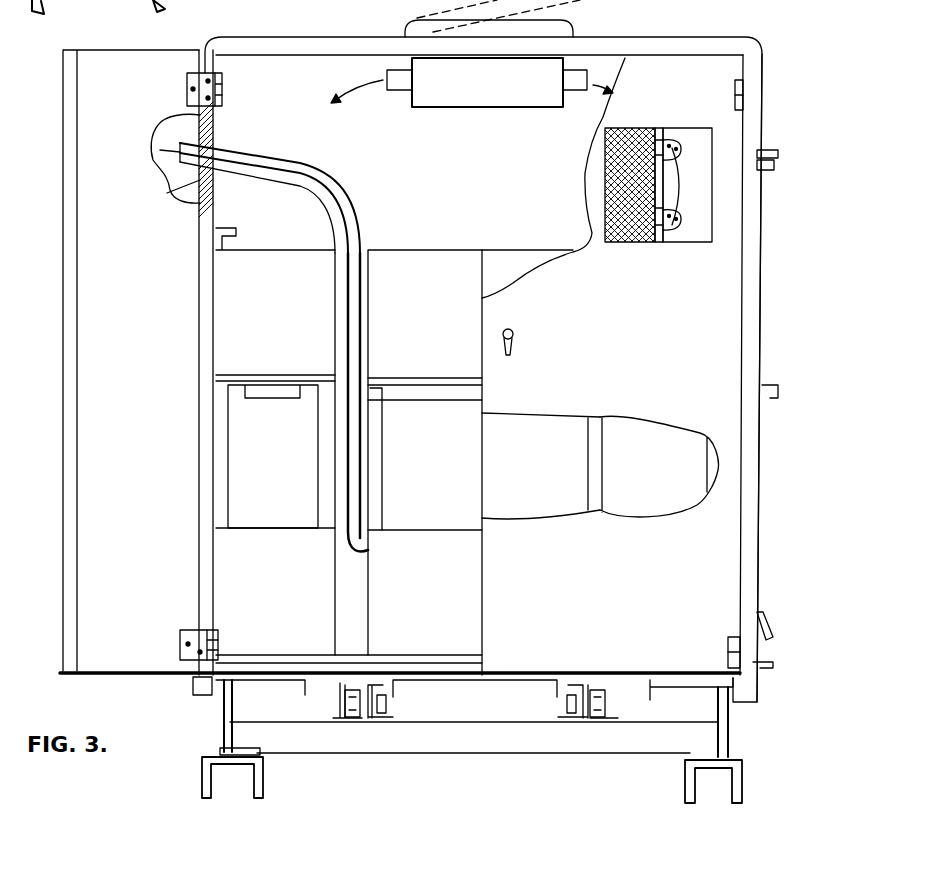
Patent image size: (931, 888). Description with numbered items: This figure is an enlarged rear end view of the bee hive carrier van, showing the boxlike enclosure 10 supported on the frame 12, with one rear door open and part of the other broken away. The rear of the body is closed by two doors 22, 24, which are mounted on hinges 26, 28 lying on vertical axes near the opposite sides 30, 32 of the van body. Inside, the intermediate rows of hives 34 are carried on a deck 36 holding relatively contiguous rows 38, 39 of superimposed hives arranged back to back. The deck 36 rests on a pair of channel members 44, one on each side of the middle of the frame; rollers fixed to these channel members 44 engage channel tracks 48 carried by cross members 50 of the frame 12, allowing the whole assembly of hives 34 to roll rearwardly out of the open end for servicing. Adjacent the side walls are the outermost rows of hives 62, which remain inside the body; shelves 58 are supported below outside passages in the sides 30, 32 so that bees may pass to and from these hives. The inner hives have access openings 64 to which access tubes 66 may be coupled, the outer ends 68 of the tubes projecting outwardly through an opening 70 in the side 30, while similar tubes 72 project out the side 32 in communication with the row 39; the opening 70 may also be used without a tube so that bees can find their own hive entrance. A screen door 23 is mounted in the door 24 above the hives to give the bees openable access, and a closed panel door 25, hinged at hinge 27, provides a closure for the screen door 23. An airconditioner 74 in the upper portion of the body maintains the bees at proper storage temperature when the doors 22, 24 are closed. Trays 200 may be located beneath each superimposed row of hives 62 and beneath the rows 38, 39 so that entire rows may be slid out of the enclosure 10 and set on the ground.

The boxlike enclosure 10 is at (661, 37).
The frame 12 is at (222, 715).
The door 22 is at (90, 357).
The screen door 23 is at (643, 128).
The door 24 is at (722, 343).
The closed panel door 25 is at (698, 143).
The hinge 26 is at (223, 97).
The hinge 27 is at (672, 234).
The hinge 28 is at (743, 97).
The side of the van body 30 is at (170, 193).
The side of the van body 32 is at (762, 197).
The intermediate rows of hives 34 is at (488, 249).
The deck 36 is at (470, 670).
The row of hives 38 is at (418, 250).
The row of hives 39 is at (543, 250).
The channel member 44 is at (365, 720).
The channel track 48 is at (340, 698).
The cross member 50 is at (490, 745).
The shelf 58 is at (778, 398).
The outermost row of hives 62 is at (270, 334).
The access opening 64 is at (368, 272).
The access tube 66 is at (333, 178).
The outer end of the tube 68 is at (162, 128).
The opening 70 is at (215, 137).
The tube 72 is at (780, 152).
The airconditioner 74 is at (535, 72).
The tray 200 is at (270, 378).